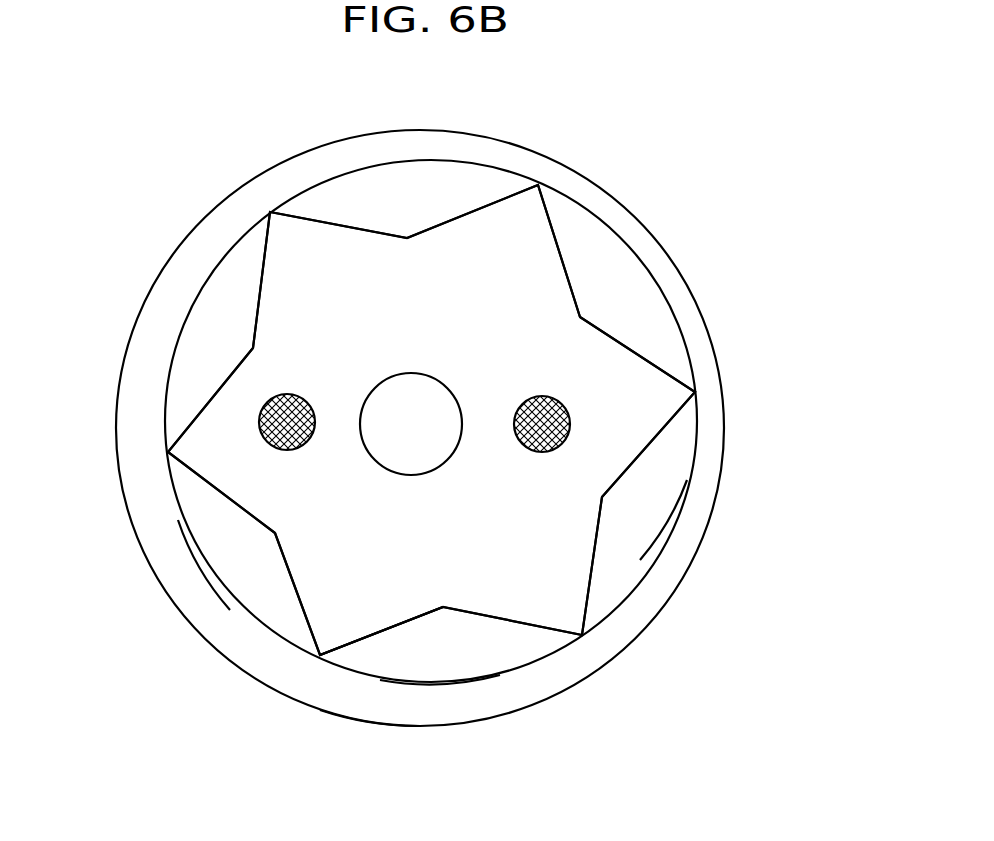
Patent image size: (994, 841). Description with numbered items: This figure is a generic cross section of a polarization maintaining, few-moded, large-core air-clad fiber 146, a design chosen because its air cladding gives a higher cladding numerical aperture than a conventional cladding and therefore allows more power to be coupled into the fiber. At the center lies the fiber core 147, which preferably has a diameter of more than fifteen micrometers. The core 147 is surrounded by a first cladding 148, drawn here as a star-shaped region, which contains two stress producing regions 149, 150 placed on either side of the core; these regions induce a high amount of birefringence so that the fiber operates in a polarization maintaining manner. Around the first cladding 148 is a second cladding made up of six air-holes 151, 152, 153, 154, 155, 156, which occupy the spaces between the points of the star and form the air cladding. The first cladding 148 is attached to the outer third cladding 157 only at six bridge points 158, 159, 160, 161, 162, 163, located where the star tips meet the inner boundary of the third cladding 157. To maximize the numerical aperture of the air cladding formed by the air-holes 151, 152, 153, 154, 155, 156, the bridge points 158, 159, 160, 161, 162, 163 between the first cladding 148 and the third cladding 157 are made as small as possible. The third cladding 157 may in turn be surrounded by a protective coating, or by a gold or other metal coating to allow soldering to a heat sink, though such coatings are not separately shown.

The air-clad fiber 146 is at (735, 745).
The fiber core 147 is at (447, 390).
The first cladding 148 is at (440, 535).
The stress producing region 149 is at (262, 443).
The stress producing region 150 is at (558, 440).
The air-hole 151 is at (192, 342).
The air-hole 152 is at (405, 182).
The air-hole 153 is at (633, 283).
The air-hole 154 is at (660, 515).
The air-hole 155 is at (447, 660).
The air-hole 156 is at (230, 552).
The third cladding 157 is at (380, 705).
The bridge point 158 is at (278, 222).
The bridge point 159 is at (531, 202).
The bridge point 160 is at (677, 398).
The bridge point 161 is at (570, 610).
The bridge point 162 is at (325, 638).
The bridge point 163 is at (182, 474).